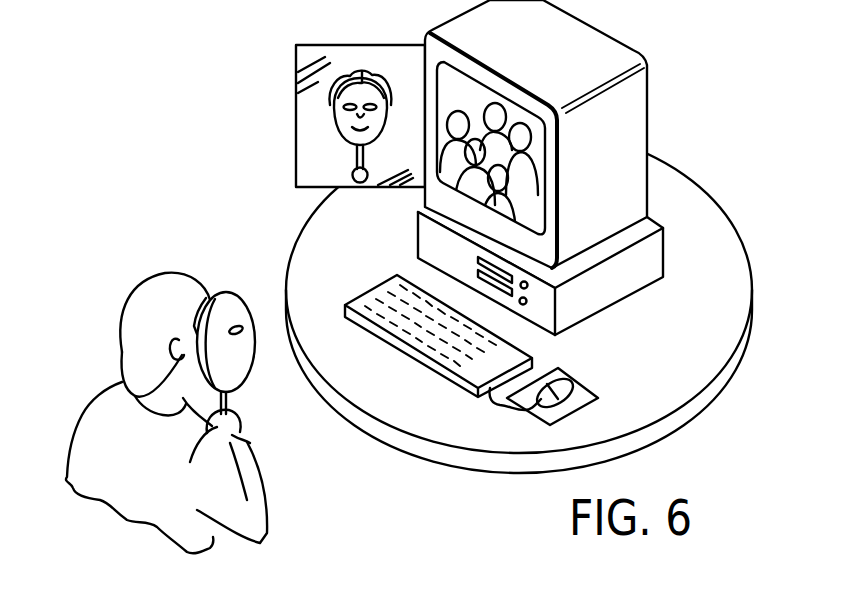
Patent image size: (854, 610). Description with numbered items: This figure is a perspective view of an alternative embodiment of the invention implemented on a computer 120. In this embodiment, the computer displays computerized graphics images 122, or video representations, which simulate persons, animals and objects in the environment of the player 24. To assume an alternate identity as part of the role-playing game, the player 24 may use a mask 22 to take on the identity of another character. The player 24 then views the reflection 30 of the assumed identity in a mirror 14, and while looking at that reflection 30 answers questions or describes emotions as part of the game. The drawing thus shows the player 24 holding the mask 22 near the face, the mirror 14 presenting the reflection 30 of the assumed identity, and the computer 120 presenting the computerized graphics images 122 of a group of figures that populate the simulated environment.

The mirror 14 is at (296, 111).
The reflection 30 is at (336, 127).
The computer monitor 120 is at (645, 113).
The computerized graphics images 122 is at (513, 180).
The mask 22 is at (230, 294).
The player 24 is at (120, 350).